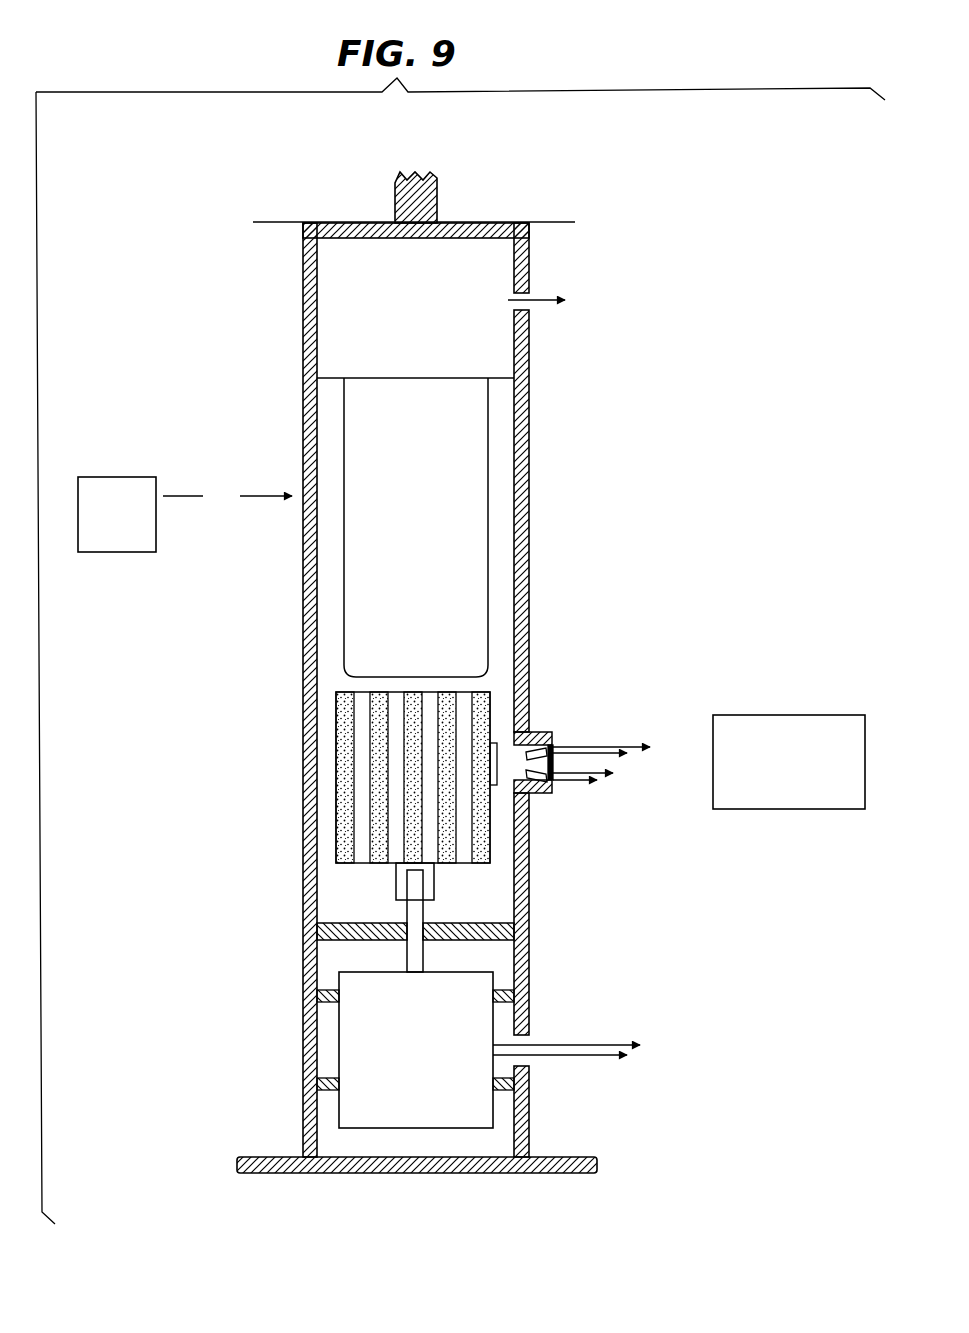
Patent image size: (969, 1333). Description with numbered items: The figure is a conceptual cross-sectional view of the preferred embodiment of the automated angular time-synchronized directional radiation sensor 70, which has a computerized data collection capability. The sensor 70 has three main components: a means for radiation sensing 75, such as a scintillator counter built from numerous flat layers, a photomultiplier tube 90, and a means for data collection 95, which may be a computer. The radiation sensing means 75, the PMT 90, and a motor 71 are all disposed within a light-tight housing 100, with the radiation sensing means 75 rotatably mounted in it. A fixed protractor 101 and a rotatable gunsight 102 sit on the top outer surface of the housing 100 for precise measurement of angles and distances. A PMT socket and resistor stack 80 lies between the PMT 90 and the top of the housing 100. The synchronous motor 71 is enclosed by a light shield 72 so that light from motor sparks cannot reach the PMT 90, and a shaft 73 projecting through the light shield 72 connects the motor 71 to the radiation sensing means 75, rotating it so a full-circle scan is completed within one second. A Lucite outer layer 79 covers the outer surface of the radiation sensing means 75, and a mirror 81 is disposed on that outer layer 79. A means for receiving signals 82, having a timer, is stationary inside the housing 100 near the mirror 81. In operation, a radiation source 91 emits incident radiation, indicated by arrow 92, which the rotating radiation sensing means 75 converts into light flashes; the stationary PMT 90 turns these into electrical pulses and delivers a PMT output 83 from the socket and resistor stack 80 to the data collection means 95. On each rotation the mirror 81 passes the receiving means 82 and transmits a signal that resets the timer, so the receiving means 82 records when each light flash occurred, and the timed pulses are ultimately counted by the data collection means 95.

The sensor 70 is at (641, 545).
The motor 71 is at (339, 1057).
The light shield 72 is at (317, 932).
The shaft 73 is at (423, 963).
The radiation sensing means 75 is at (336, 778).
The Lucite outer layer 79 is at (488, 830).
The PMT socket and resistor stack 80 is at (316, 299).
The mirror 81 is at (497, 748).
The means for receiving signals 82 is at (553, 735).
The PMT output 83 is at (555, 300).
The photomultiplier tube 90 is at (344, 577).
The radiation source 91 is at (113, 552).
The arrow 92 is at (227, 492).
The means for data collection 95 is at (814, 809).
The housing 100 is at (312, 401).
The fixed protractor 101 is at (553, 222).
The rotatable gunsight 102 is at (440, 193).